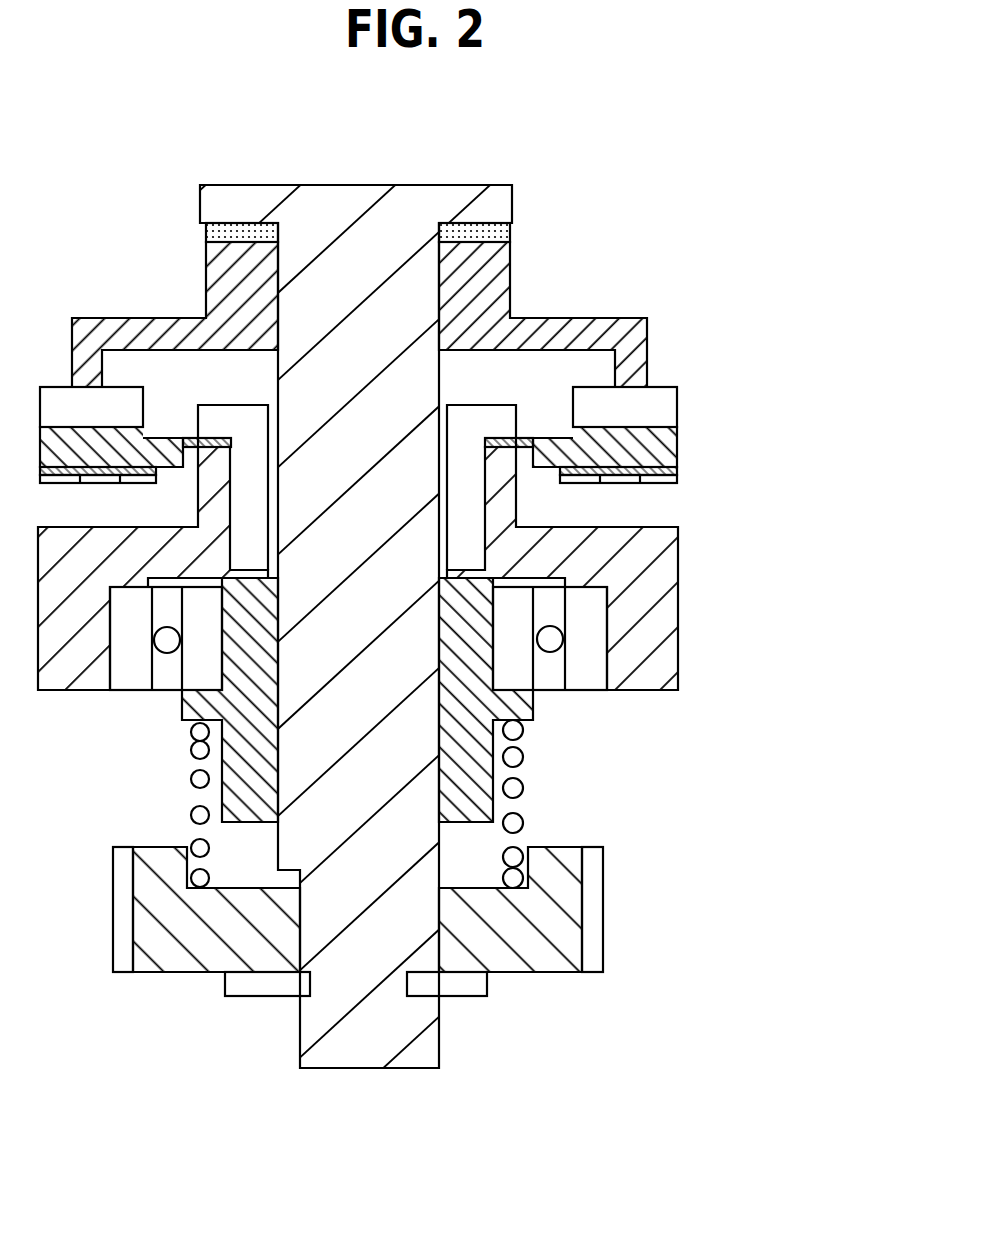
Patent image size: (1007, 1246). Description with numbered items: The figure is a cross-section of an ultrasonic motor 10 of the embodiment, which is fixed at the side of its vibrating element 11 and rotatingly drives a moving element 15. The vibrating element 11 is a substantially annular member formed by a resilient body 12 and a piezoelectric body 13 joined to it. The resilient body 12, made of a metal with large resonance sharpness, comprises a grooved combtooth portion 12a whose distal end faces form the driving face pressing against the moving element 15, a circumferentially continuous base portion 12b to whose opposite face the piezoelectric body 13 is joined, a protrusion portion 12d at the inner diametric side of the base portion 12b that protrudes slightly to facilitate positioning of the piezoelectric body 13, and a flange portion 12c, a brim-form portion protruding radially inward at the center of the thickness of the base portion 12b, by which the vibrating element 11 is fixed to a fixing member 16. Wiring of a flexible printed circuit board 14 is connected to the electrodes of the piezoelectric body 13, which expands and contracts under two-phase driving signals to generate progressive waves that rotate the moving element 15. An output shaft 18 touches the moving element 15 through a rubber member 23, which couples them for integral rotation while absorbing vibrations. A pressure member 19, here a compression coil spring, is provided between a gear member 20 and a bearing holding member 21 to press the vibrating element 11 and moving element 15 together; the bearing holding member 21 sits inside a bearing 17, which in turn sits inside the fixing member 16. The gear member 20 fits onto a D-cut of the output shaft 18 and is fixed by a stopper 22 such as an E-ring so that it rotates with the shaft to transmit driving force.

The ultrasonic motor 10 is at (687, 183).
The vibrating element 11 is at (483, 410).
The resilient body 12 is at (450, 397).
The combtooth portion 12a is at (650, 405).
The base portion 12b is at (650, 448).
The flange portion 12c is at (515, 443).
The protrusion portion 12d is at (548, 453).
The piezoelectric body 13 is at (660, 472).
The flexible printed circuit board 14 is at (637, 477).
The moving element 15 is at (482, 292).
The fixing member 16 is at (648, 590).
The bearing 17 is at (577, 678).
The output shaft 18 is at (400, 272).
The pressure member 19 is at (513, 789).
The gear member 20 is at (537, 953).
The bearing holding member 21 is at (223, 703).
The stopper 22 is at (465, 983).
The rubber member 23 is at (220, 233).